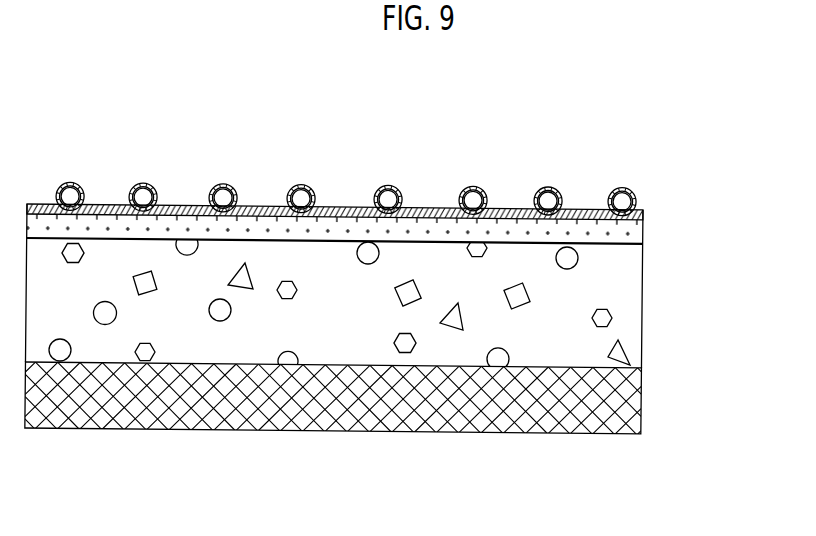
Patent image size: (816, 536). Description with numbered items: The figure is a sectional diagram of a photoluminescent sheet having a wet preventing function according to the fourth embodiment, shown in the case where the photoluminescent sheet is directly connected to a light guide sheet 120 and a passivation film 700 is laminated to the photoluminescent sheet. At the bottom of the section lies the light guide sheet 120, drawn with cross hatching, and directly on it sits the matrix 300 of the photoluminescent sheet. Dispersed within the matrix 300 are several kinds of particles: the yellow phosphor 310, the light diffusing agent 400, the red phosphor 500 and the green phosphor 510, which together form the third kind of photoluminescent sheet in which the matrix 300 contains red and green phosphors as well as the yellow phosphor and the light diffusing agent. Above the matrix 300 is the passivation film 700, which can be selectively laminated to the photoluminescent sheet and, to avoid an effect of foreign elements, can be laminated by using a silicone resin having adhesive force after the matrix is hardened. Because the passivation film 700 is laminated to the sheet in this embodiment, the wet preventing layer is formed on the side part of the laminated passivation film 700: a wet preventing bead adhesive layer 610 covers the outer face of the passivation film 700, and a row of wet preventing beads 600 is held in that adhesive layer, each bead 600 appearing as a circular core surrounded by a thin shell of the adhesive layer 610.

The light guide sheet 120 is at (623, 397).
The matrix 300 is at (623, 300).
The yellow phosphor 310 is at (578, 260).
The light diffusing agent 400 is at (404, 350).
The red phosphor 500 is at (454, 323).
The green phosphor 510 is at (520, 300).
The wet preventing bead 600 is at (622, 197).
The wet preventing bead adhesive layer 610 is at (636, 208).
The passivation film 700 is at (628, 235).